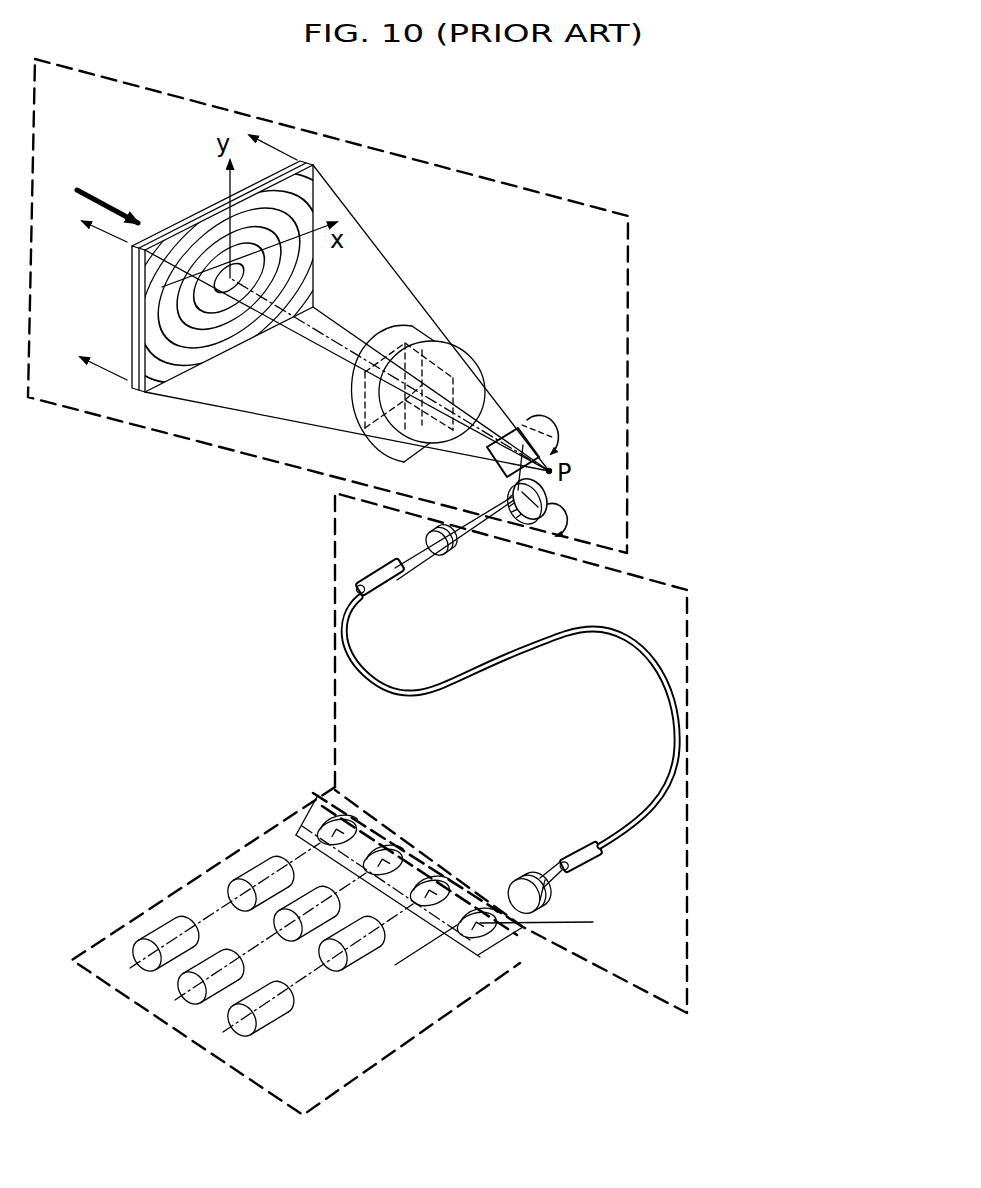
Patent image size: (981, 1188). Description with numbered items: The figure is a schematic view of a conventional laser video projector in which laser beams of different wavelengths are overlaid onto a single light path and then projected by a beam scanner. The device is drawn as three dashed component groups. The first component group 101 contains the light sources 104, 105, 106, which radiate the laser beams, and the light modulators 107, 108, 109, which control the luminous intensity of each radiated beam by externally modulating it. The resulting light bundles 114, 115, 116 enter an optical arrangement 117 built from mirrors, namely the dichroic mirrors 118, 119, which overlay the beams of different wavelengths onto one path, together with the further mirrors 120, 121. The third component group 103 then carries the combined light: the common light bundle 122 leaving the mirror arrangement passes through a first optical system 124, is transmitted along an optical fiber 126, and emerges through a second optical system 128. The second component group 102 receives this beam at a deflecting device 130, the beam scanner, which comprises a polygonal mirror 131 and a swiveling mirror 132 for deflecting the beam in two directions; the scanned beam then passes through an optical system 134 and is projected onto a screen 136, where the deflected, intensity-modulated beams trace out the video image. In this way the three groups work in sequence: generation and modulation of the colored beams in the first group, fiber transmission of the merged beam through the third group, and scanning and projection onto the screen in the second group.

The first component group 101 is at (362, 1076).
The second component group 102 is at (634, 262).
The third component group 103 is at (685, 582).
The light source 104 is at (273, 1013).
The light source 105 is at (195, 1002).
The light source 106 is at (157, 922).
The light modulator 107 is at (363, 953).
The light modulator 108 is at (290, 937).
The light modulator 109 is at (250, 865).
The light bundle 114 is at (427, 943).
The light bundle 115 is at (390, 907).
The light bundle 116 is at (293, 852).
The optical arrangement 117 is at (493, 950).
The dichroic mirror 118 is at (443, 862).
The dichroic mirror 119 is at (396, 838).
The mirror 120 is at (355, 812).
The mirror 121 is at (563, 922).
The common light bundle 122 is at (505, 892).
The first optical system 124 is at (550, 900).
The optical fiber 126 is at (593, 628).
The second optical system 128 is at (455, 548).
The deflecting device 130 is at (520, 405).
The polygonal mirror 131 is at (552, 489).
The swiveling mirror 132 is at (489, 450).
The optical system 134 is at (467, 347).
The screen 136 is at (168, 243).